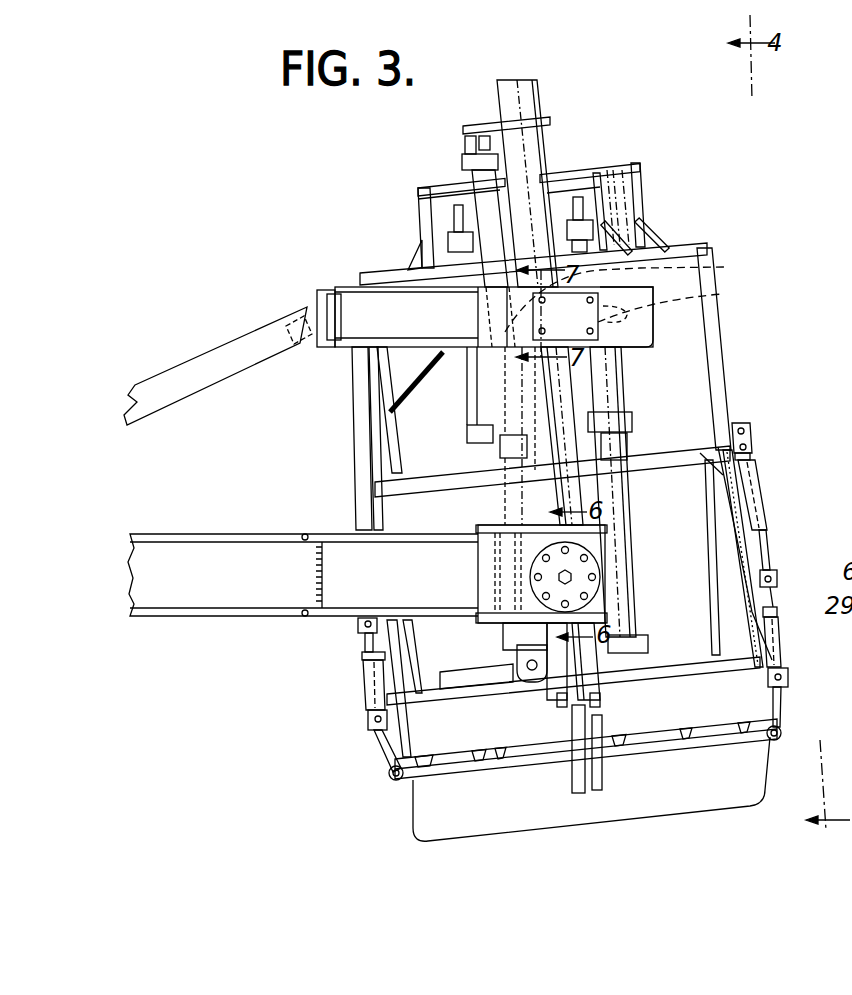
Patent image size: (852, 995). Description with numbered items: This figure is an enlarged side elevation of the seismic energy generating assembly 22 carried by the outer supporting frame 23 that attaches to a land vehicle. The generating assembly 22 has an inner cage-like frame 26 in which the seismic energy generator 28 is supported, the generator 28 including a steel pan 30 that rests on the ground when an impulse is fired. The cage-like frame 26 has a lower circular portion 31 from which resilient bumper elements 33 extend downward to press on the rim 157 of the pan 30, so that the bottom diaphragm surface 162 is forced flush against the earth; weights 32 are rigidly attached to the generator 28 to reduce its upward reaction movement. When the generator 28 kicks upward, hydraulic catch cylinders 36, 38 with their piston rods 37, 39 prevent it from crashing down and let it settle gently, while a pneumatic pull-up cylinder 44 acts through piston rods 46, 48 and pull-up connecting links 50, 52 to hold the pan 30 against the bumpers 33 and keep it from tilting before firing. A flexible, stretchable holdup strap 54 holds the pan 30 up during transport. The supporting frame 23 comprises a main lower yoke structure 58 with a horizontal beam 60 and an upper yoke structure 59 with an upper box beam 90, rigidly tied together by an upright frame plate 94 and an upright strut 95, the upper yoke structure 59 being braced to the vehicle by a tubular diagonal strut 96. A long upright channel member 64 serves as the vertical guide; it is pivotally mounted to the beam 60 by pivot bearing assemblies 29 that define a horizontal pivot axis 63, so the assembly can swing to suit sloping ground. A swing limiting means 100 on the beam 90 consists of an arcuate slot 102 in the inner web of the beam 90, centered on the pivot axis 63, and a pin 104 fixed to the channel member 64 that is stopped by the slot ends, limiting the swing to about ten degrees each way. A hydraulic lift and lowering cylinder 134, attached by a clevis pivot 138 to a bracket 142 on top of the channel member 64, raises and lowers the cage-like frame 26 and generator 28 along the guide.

The seismic energy generating assembly 22 is at (714, 196).
The outer supporting frame 23 is at (241, 636).
The inner cage-like frame 26 is at (728, 362).
The seismic energy generator 28 is at (700, 612).
The pivot bearing assemblies 29 is at (600, 545).
The steel pan 30 is at (723, 800).
The lower circular portion 31 is at (486, 736).
The weights 32 is at (475, 672).
The resilient bumper elements 33 is at (503, 765).
The hydraulic catch cylinder 36 is at (475, 393).
The piston rod 37 is at (492, 512).
The hydraulic catch cylinder 38 is at (628, 385).
The piston rod 39 is at (628, 446).
The pneumatic pull-up cylinder 44 is at (760, 490).
The piston rod 46 is at (768, 545).
The piston rod 48 is at (358, 626).
The pull-up connecting link 50 is at (781, 697).
The pull-up connecting link 52 is at (385, 745).
The holdup strap 54 is at (590, 722).
The main lower yoke structure 58 is at (396, 588).
The upper yoke structure 59 is at (407, 331).
The beam 60 is at (246, 533).
The horizontal pivot axis 63 is at (572, 577).
The upright channel member 64 is at (540, 158).
The upper beam 90 is at (350, 285).
The upright frame plate 94 is at (352, 430).
The upright strut 95 is at (515, 502).
The diagonal strut 96 is at (215, 348).
The swing limiting means 100 is at (655, 318).
The arcuate slot 102 is at (685, 301).
The pin 104 is at (639, 293).
The hydraulic lift and lowering cylinder 134 is at (470, 190).
The clevis pivot 138 is at (468, 148).
The bracket 142 is at (487, 128).
The rim 157 is at (398, 781).
The bottom diaphragm surface 162 is at (630, 828).